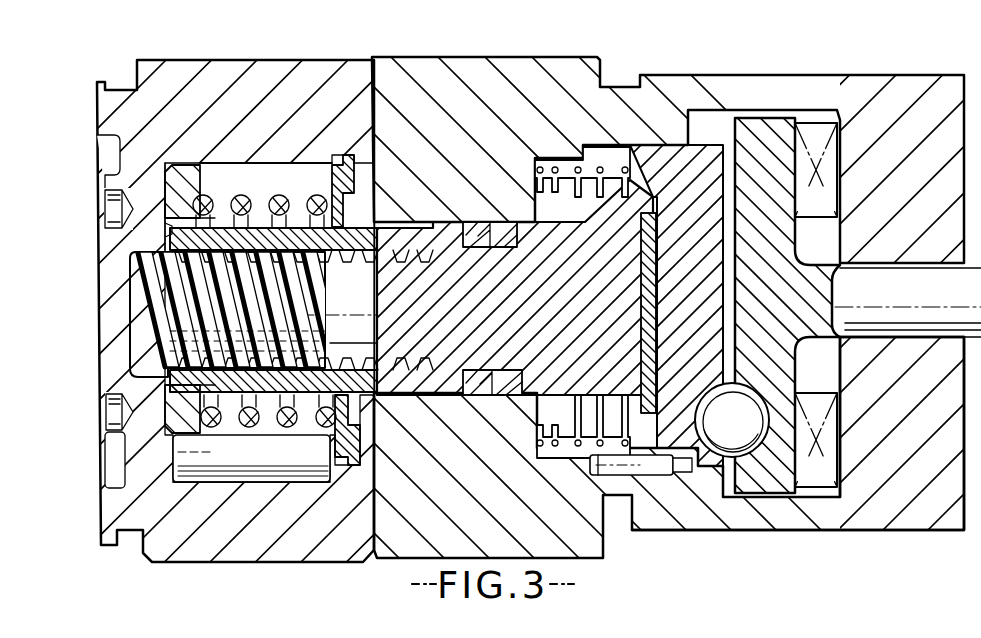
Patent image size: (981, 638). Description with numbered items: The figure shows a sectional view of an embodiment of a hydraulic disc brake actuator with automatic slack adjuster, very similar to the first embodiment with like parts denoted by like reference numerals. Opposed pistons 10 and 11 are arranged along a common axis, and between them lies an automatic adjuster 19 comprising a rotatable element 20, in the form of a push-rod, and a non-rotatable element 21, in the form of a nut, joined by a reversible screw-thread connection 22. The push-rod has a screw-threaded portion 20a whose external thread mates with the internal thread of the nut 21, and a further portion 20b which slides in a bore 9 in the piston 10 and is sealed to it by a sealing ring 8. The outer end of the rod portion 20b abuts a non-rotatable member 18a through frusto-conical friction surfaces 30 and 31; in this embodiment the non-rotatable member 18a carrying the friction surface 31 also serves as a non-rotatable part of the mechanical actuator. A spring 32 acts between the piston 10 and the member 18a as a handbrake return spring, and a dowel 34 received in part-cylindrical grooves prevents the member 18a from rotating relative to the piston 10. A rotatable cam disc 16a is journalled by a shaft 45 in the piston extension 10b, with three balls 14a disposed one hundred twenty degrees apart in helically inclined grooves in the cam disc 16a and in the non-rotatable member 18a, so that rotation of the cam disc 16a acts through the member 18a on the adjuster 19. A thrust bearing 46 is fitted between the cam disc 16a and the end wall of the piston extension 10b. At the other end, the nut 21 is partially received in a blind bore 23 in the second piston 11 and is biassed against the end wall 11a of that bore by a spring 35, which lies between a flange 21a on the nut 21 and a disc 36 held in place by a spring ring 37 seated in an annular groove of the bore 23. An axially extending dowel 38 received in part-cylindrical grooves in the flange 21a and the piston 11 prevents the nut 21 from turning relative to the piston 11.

The sealing ring 8 is at (505, 222).
The bore 9 is at (527, 397).
The piston 10 is at (488, 77).
The piston extension 10b is at (837, 513).
The piston 11 is at (250, 80).
The end wall 11a is at (168, 235).
The balls 14a is at (750, 458).
The cam disc 16a is at (759, 130).
The non-rotatable member 18a is at (712, 460).
The automatic adjuster 19 is at (417, 418).
The rotatable element 20 is at (342, 308).
The screw-threaded portion 20a is at (158, 313).
The further portion 20b is at (557, 308).
The non-rotatable element 21 is at (221, 228).
The flange 21a is at (173, 183).
The reversible screw-thread connection 22 is at (264, 329).
The blind bore 23 is at (247, 163).
The frusto-conical friction surface 30 is at (648, 195).
The frusto-conical friction surface 31 is at (585, 434).
The spring 32 is at (582, 150).
The dowel 34 is at (660, 478).
The spring 35 is at (251, 458).
The disc 36 is at (338, 165).
The spring ring 37 is at (339, 462).
The dowel 38 is at (257, 482).
The shaft 45 is at (922, 301).
The thrust bearing 46 is at (812, 135).